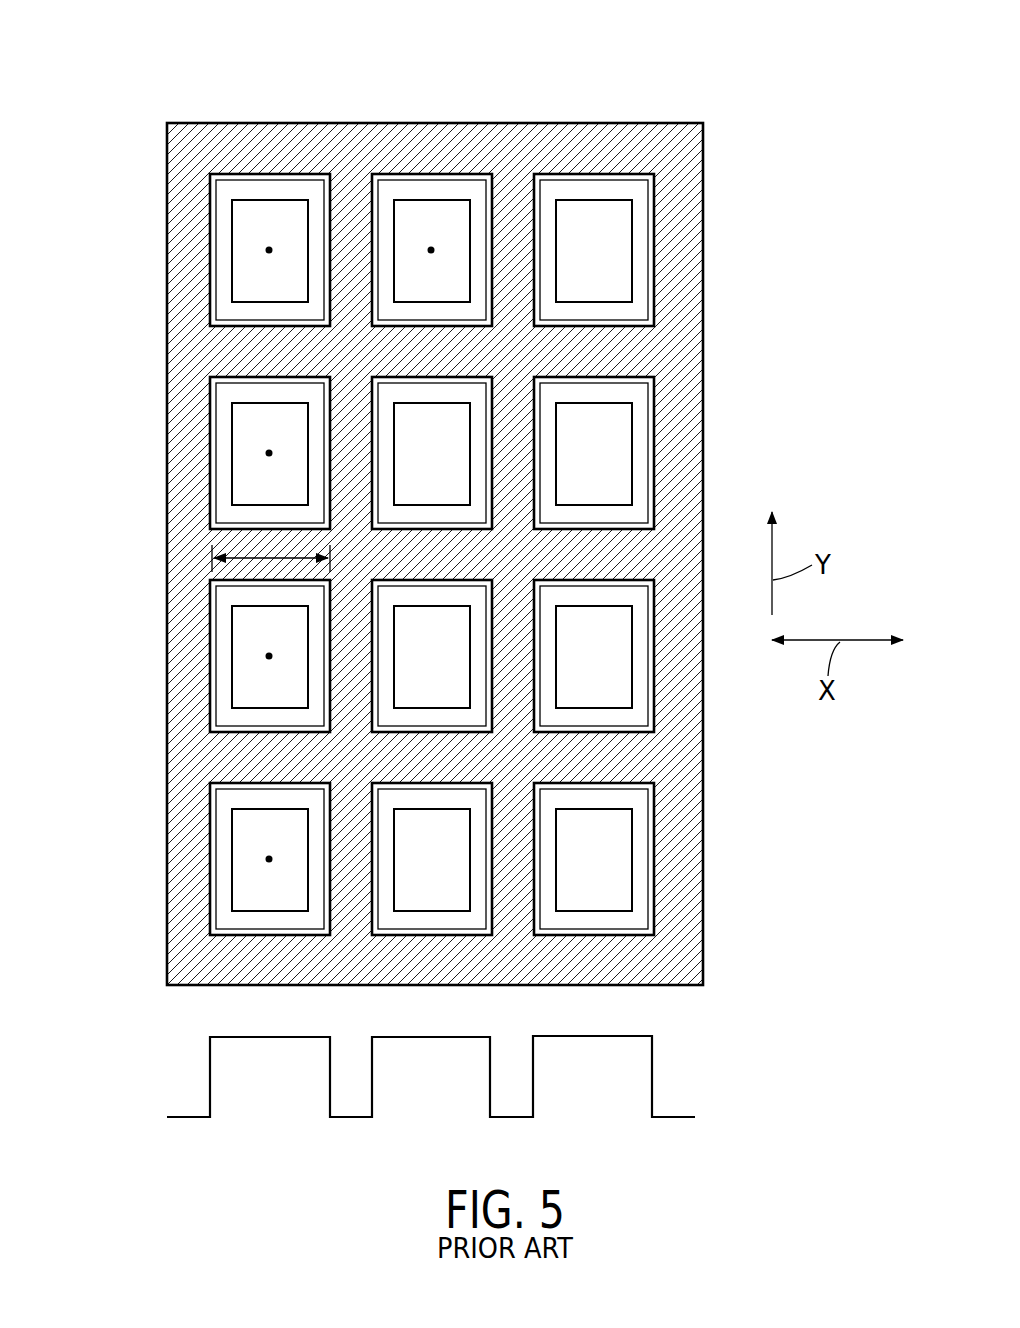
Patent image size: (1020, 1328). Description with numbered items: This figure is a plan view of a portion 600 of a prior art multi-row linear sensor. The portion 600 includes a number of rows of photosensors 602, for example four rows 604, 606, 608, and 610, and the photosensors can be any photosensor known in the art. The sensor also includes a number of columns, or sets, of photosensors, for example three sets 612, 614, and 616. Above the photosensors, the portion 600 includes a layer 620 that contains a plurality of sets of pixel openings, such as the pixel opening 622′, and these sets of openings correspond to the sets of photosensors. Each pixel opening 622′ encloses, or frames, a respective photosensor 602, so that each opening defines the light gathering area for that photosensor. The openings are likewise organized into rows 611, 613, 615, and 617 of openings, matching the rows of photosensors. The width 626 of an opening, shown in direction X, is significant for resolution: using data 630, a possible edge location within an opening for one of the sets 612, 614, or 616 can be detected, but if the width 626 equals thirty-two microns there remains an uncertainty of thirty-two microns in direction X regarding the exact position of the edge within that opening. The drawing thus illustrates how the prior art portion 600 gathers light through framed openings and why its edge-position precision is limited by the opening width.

The portion of prior art multi-row linear sensor 600 is at (510, 504).
The photosensor 602 is at (658, 661).
The row of photosensors 604 is at (432, 250).
The row of photosensors 606 is at (190, 475).
The row of photosensors 608 is at (426, 656).
The row of photosensors 610 is at (190, 868).
The row of openings 611 is at (136, 240).
The row of openings 613 is at (136, 438).
The row of openings 615 is at (136, 628).
The row of openings 617 is at (136, 830).
The set of photosensors 612 is at (270, 153).
The set of photosensors 614 is at (432, 153).
The set of photosensors 616 is at (596, 153).
The layer 620 is at (686, 211).
The pixel opening 622′ is at (652, 277).
The width 626 is at (308, 556).
The data 630 is at (208, 1071).